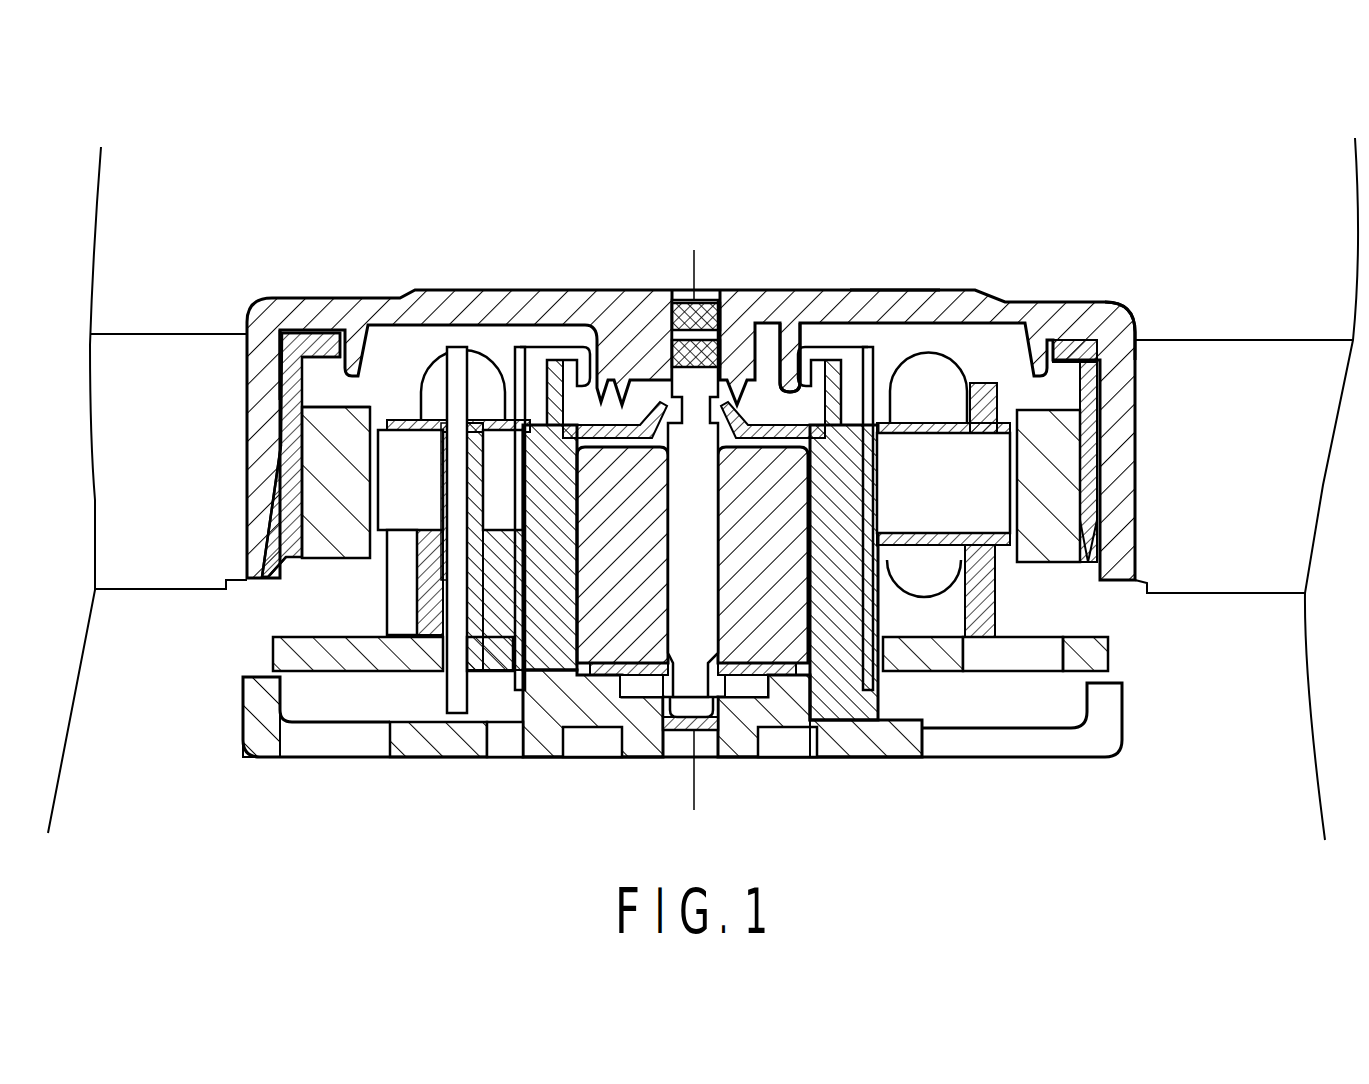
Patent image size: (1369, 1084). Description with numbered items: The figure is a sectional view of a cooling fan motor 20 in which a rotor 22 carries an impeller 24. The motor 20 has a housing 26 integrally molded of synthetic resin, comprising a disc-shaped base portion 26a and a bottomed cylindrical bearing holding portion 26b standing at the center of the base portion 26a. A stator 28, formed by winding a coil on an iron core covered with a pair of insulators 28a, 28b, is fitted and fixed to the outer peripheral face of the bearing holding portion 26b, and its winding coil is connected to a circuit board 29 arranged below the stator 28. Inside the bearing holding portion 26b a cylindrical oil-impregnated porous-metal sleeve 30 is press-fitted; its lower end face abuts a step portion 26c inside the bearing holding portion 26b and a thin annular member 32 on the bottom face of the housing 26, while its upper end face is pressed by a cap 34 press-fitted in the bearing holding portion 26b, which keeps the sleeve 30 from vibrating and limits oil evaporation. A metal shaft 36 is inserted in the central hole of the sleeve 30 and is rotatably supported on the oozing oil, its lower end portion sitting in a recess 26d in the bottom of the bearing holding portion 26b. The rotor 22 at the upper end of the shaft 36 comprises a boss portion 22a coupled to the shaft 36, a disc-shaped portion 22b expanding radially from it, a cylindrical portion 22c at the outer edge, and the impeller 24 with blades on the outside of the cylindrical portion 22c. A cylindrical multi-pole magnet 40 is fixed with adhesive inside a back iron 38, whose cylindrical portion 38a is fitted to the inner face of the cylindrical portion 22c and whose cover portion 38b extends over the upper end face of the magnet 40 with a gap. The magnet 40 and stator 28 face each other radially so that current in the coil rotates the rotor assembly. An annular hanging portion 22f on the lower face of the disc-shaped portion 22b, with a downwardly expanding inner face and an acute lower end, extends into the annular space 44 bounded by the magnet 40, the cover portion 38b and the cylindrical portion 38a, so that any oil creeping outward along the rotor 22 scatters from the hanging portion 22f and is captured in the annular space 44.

The motor 20 is at (275, 242).
The rotor 22 is at (988, 254).
The boss portion 22a is at (757, 355).
The disc-shaped portion 22b is at (893, 297).
The cylindrical portion 22c is at (1130, 335).
The hanging portion 22f is at (316, 358).
The impeller 24 is at (1238, 363).
The housing 26 is at (1134, 767).
The base portion 26a is at (838, 735).
The bearing holding portion 26b is at (893, 647).
The step portion 26c is at (793, 673).
The recess 26d is at (643, 757).
The stator 28 is at (1014, 497).
The insulator 28a is at (985, 406).
The insulator 28b is at (985, 577).
The circuit board 29 is at (1113, 654).
The sleeve 30 is at (445, 755).
The annular member 32 is at (552, 755).
The cap 34 is at (548, 362).
The shaft 36 is at (675, 297).
The back iron 38 is at (282, 548).
The cylindrical portion 38a is at (273, 560).
The cover portion 38b is at (295, 345).
The magnet 40 is at (340, 542).
The annular space 44 is at (322, 397).